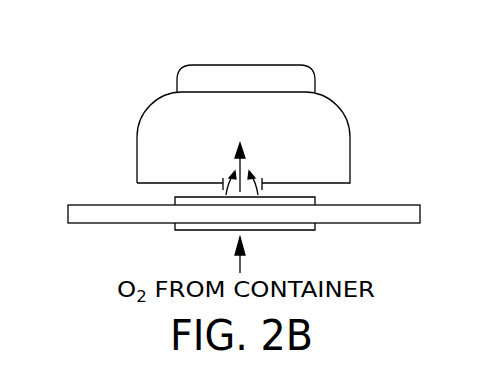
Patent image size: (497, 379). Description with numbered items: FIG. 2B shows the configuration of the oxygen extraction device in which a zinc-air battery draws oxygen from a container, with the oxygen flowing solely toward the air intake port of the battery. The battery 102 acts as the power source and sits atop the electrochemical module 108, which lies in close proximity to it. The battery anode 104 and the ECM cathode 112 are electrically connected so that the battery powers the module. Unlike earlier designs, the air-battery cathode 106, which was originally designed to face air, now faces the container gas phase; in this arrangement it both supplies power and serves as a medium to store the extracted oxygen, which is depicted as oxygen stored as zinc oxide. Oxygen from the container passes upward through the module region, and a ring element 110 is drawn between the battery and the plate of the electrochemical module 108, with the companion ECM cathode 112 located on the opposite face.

The battery 102 is at (93, 182).
The battery anode 104 is at (263, 63).
The air-battery cathode 106 is at (305, 182).
The electrochemical module 108 is at (102, 215).
The upper seal ring 110 is at (315, 200).
The ECM cathode 112 is at (315, 228).